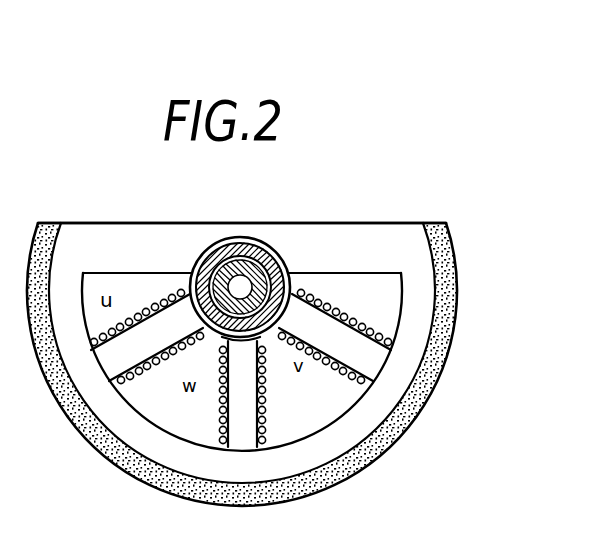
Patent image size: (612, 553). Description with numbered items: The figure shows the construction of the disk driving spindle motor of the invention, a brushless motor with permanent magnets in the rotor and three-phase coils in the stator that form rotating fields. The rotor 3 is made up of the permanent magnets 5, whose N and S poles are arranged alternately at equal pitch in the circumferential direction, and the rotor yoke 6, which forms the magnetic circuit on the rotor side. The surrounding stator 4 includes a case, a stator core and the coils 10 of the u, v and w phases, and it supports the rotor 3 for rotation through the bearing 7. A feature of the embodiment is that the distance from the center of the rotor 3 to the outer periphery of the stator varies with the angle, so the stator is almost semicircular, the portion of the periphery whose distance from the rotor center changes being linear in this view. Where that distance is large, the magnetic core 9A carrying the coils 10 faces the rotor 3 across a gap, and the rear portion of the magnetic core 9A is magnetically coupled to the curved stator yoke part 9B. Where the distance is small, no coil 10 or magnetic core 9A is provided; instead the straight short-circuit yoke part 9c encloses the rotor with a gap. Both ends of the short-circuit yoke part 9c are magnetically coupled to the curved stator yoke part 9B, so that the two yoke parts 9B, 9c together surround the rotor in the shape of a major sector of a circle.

The rotor 3 is at (450, 272).
The stator 4 is at (447, 232).
The permanent magnets 5 is at (228, 243).
The rotor yoke 6 is at (217, 242).
The bearing 7 is at (290, 262).
The magnetic core 9A is at (158, 360).
The curved stator yoke part 9B is at (407, 383).
The straight short-circuit yoke part 9c is at (82, 233).
The coils 10 is at (266, 405).